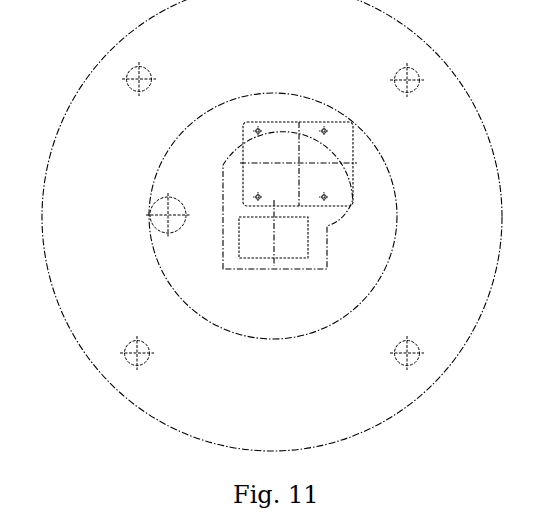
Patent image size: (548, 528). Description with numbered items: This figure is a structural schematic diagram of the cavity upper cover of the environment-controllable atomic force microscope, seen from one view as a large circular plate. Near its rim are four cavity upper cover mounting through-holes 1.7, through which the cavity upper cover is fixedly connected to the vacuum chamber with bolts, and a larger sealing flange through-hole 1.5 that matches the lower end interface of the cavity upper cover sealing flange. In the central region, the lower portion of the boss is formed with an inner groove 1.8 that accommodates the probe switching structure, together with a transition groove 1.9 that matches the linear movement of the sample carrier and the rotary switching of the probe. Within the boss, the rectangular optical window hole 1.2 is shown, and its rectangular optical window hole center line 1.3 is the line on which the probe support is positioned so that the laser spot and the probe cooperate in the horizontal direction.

The rectangular optical window hole 1.2 is at (264, 240).
The rectangular optical window hole center line 1.3 is at (274, 258).
The sealing flange through-hole 1.5 is at (168, 197).
The cavity upper cover mounting through-hole 1.7 is at (138, 66).
The inner groove 1.8 is at (354, 150).
The transition groove 1.9 is at (357, 182).